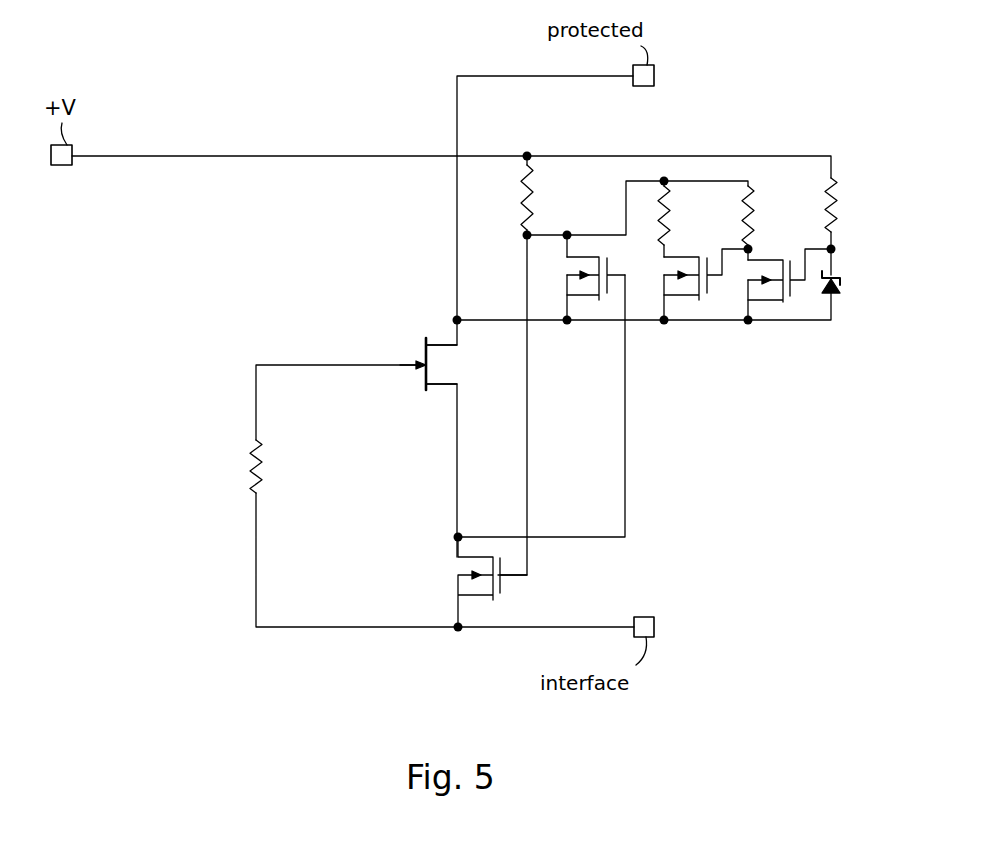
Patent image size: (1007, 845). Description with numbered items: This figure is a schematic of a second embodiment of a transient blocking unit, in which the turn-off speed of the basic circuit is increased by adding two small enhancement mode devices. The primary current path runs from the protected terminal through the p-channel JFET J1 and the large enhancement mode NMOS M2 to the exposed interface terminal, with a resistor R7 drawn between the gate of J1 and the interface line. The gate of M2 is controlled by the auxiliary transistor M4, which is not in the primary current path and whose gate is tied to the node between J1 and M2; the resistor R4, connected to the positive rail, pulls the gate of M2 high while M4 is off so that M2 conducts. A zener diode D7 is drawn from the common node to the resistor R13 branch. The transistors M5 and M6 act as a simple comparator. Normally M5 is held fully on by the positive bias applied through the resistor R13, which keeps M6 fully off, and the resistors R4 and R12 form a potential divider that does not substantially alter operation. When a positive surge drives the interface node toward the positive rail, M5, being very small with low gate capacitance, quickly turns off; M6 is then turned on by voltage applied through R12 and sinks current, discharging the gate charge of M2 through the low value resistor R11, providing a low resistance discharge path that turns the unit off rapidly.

The resistor R4 is at (522, 206).
The auxiliary transistor M4 is at (602, 255).
The resistor R11 is at (671, 212).
The enhancement mode device M6 is at (699, 257).
The resistor R12 is at (752, 213).
The enhancement mode device M5 is at (784, 259).
The resistor R13 is at (836, 202).
The zener diode D7 is at (838, 292).
The p-channel junction field effect transistor J1 is at (426, 350).
The resistor R7 is at (252, 470).
The primary transistor M2 is at (495, 600).